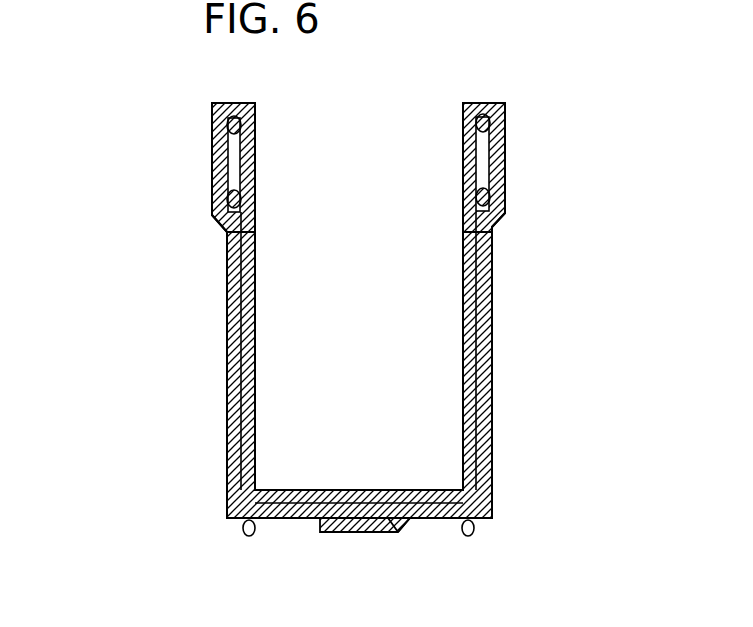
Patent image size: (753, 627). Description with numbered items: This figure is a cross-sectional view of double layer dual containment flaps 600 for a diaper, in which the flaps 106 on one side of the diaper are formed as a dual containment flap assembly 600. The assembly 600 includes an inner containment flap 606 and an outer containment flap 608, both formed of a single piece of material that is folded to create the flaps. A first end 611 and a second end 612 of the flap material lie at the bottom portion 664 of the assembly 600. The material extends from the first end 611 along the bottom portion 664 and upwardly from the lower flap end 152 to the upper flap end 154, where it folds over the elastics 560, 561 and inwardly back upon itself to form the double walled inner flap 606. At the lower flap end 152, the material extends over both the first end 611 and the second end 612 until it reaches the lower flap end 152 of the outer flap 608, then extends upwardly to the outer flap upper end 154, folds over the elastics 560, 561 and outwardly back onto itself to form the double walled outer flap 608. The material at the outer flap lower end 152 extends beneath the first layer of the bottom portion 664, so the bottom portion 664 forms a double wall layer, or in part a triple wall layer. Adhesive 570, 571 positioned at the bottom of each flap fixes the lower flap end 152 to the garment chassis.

The double layer containment flaps 600 is at (160, 75).
The upper flap end 154 is at (233, 103).
The elastic member 561 is at (232, 124).
The elastic member 560 is at (232, 197).
The inner containment flap 106 is at (195, 300).
The inner containment flap 606 is at (228, 360).
The outer containment flap 608 is at (492, 360).
The bottom portion 664 is at (325, 480).
The lower flap end 152 is at (228, 518).
The adhesive 570 is at (243, 530).
The adhesive 571 is at (475, 530).
The second end 612 is at (318, 530).
The first end 611 is at (398, 527).